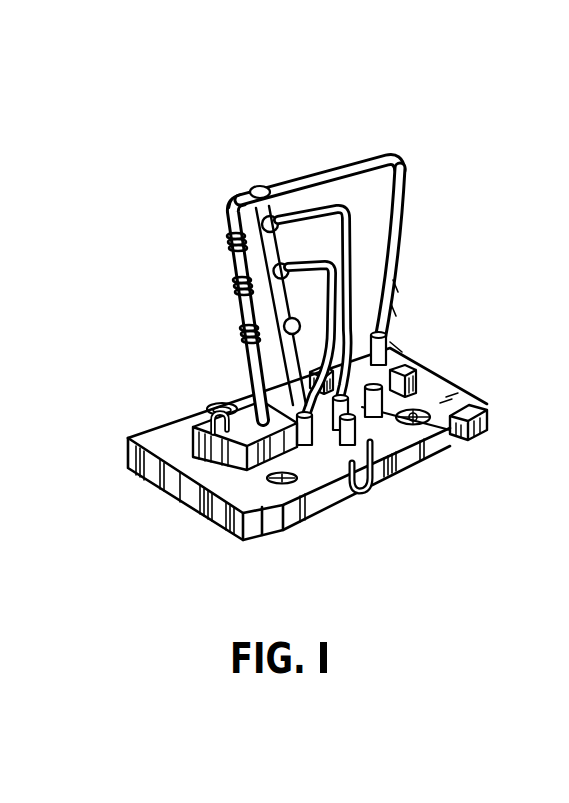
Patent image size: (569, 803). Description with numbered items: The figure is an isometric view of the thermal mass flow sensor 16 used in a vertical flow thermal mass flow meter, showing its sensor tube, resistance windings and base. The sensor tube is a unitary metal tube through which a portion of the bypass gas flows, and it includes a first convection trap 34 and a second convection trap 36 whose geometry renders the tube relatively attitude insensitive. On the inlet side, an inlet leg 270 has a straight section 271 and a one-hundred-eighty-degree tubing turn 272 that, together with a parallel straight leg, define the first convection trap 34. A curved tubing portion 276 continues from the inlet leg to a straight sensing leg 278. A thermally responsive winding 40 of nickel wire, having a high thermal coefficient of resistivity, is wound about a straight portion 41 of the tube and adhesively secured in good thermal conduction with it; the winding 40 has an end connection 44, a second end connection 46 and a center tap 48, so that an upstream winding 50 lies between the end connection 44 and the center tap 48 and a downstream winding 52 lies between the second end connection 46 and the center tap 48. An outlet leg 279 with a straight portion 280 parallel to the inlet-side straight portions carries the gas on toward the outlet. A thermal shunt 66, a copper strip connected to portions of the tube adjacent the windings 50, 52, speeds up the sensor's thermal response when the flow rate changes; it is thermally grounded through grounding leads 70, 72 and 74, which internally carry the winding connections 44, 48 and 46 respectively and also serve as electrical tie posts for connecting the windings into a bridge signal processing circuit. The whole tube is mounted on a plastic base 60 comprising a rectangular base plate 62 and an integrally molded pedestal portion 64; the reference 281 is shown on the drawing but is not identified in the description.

The thermal mass flow sensor 16 is at (282, 252).
The straight portion of the outlet leg 280 is at (322, 172).
The outlet leg 279 is at (404, 243).
The second convection trap 36 is at (228, 214).
The second end connection 46 is at (232, 199).
The thermal shunt 66 is at (260, 186).
The downstream winding 52 is at (228, 237).
The center tap 48 is at (229, 256).
The straight portion of the sensor tube 41 is at (234, 302).
The straight sensing leg 278 is at (236, 311).
The end connection 44 is at (240, 318).
The thermally responsive winding 40 is at (246, 341).
The upstream winding 50 is at (250, 357).
The curved tubing portion 276 is at (262, 370).
The grounding lead 70 is at (258, 385).
The inlet leg 270 is at (126, 440).
The rectangular base plate 62 is at (181, 493).
The straight section of the inlet leg 271 is at (283, 476).
The pedestal portion 64 is at (400, 360).
The plastic base 60 is at (440, 443).
The grounding lead 74 is at (303, 211).
The grounding lead 72 is at (298, 262).
The 180° tubing turn 272 is at (395, 287).
The right post section 281 is at (394, 310).
The first convection trap 34 is at (402, 347).